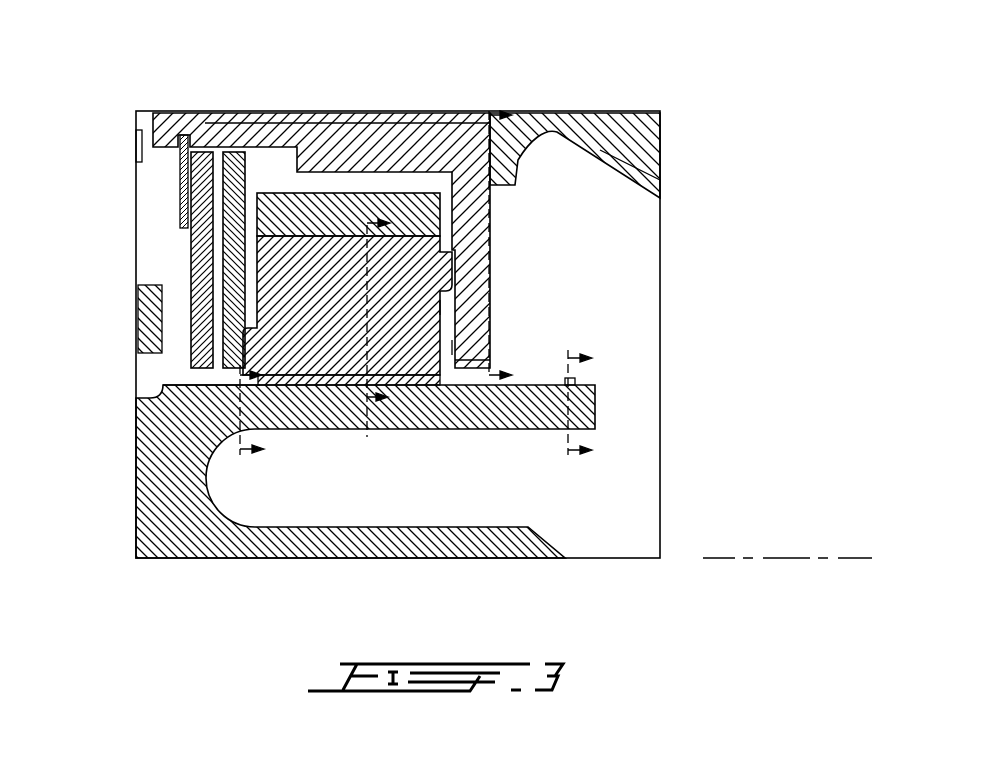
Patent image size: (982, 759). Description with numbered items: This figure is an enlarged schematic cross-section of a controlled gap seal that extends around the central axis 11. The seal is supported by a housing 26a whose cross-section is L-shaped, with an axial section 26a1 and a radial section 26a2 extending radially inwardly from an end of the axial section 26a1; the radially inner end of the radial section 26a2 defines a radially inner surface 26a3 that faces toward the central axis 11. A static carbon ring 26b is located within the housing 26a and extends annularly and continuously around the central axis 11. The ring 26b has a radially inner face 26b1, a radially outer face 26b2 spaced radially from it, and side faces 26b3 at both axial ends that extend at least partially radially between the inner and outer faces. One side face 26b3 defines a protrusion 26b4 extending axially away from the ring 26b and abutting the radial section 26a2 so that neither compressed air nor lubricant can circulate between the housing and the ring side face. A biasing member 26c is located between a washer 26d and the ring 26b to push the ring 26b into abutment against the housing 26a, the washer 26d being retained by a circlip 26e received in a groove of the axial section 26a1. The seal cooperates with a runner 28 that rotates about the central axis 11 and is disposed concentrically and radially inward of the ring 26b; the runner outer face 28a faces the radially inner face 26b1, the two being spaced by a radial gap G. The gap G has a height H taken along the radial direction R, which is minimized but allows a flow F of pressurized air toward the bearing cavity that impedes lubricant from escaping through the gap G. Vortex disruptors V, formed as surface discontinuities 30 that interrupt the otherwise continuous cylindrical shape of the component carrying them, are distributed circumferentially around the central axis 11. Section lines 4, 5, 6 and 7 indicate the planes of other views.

The housing 26a is at (407, 142).
The axial section 26a1 is at (330, 137).
The radial section 26a2 is at (485, 212).
The radially inner surface 26a3 is at (470, 374).
The ring 26b is at (412, 285).
The radially inner face 26b1 is at (410, 386).
The radially outer face 26b2 is at (425, 236).
The side faces 26b3 is at (453, 347).
The protrusion 26b4 is at (450, 307).
The biasing member 26c is at (235, 160).
The washer 26d is at (202, 157).
The circlip 26e is at (180, 170).
The runner 28 is at (480, 536).
The outer face 28a is at (200, 385).
The surface discontinuities 30 is at (578, 380).
The central axis 11 is at (790, 560).
The section line 4- 4 is at (569, 406).
The section line 5- 5 is at (510, 234).
The section line 6- 6 is at (240, 366).
The section line 7- 7 is at (367, 225).
The vortex disruptors V is at (305, 362).
The flow F is at (217, 375).
The gap G is at (270, 388).
The height H is at (575, 379).
The radial direction R is at (834, 538).